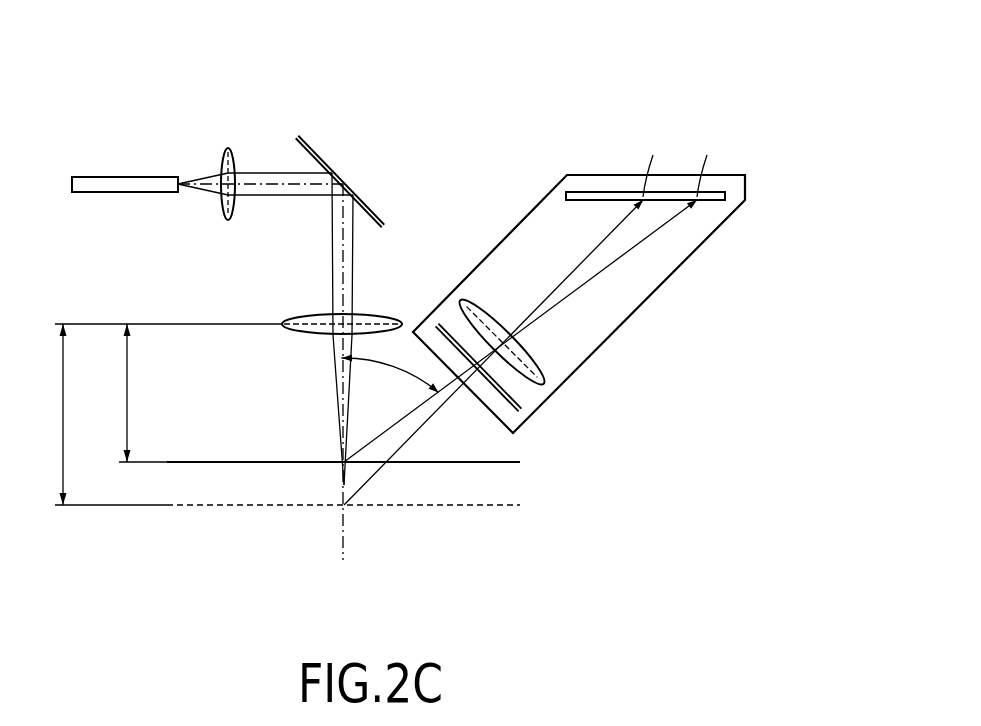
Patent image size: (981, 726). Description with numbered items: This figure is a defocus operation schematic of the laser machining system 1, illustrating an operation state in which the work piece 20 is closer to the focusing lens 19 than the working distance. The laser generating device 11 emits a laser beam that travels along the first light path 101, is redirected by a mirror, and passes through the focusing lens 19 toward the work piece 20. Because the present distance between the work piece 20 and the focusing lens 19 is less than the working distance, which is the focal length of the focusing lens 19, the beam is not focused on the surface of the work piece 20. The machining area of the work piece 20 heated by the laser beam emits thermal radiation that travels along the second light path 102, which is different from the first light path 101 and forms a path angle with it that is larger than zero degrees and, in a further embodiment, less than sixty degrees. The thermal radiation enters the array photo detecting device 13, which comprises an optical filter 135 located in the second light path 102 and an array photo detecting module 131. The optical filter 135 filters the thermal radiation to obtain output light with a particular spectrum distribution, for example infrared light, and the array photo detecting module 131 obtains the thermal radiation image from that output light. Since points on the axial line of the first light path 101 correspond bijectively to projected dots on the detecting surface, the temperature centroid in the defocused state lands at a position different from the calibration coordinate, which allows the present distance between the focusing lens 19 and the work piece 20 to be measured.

The laser machining system 1 is at (727, 60).
The laser generating device 11 is at (92, 177).
The first light path 101 is at (332, 243).
The focusing lens 19 is at (315, 315).
The work piece 20 is at (507, 460).
The second light path 102 is at (403, 447).
The array photo detecting device 13 is at (747, 183).
The array photo detecting module 131 is at (717, 201).
The optical filter 135 is at (518, 410).